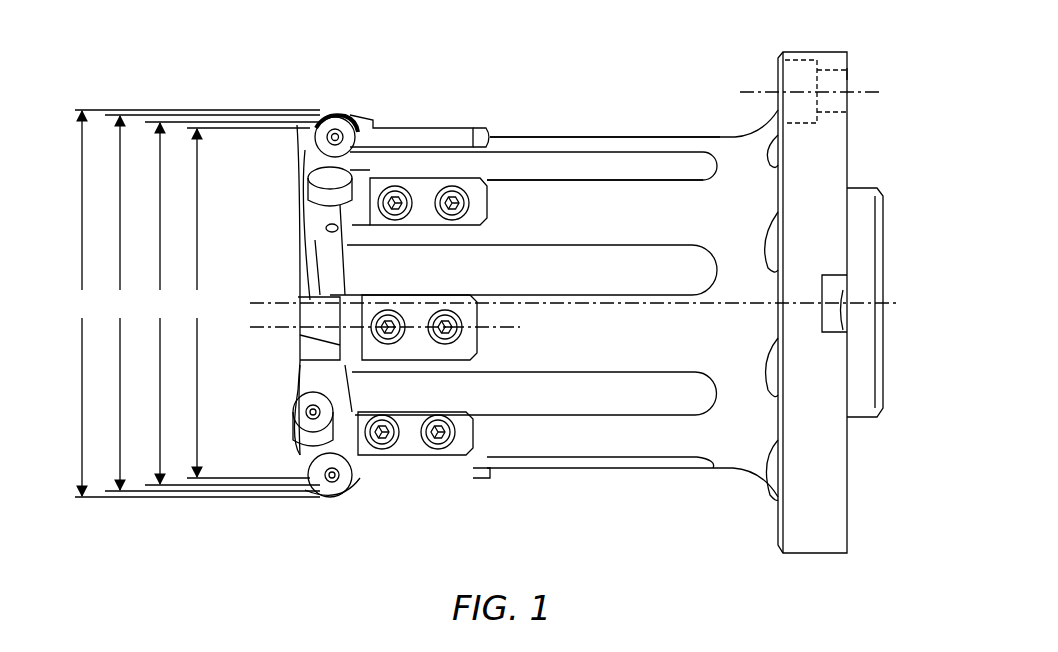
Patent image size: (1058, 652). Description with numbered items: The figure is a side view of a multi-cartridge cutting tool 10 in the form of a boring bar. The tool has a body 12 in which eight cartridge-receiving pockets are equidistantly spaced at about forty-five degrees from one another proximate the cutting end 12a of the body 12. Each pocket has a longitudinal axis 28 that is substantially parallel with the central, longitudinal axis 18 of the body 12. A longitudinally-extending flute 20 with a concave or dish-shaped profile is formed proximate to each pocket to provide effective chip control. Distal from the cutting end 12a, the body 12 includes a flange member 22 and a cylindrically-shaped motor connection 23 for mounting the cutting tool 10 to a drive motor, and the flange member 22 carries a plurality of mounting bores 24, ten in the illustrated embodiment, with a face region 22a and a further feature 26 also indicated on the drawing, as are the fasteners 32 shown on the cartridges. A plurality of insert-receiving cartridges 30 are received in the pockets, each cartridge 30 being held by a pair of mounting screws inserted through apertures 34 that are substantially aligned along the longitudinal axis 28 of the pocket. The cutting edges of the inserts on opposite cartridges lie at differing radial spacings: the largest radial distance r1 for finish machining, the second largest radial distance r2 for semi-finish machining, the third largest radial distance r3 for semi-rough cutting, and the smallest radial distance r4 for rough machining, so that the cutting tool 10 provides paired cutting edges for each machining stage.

The cutting tool 10 is at (163, 55).
The body 12 is at (738, 140).
The cutting end 12a is at (279, 166).
The central, longitudinal axis 18 is at (900, 303).
The longitudinally-extending flute 20 is at (633, 270).
The flange member 22 is at (806, 52).
The flange outer face 22a is at (847, 75).
The motor connection 23 is at (855, 188).
The mounting bore 24 is at (777, 75).
The slot 26 is at (607, 197).
The longitudinal axis of pocket 28 is at (518, 327).
The insert-receiving cartridge 30 is at (397, 184).
The screws 32 is at (442, 190).
The aperture 34 is at (470, 203).
The largest radial distance r1 is at (196, 303).
The second largest radial distance r2 is at (212, 303).
The third largest radial distance r3 is at (232, 303).
The smallest radial distance r4 is at (248, 303).